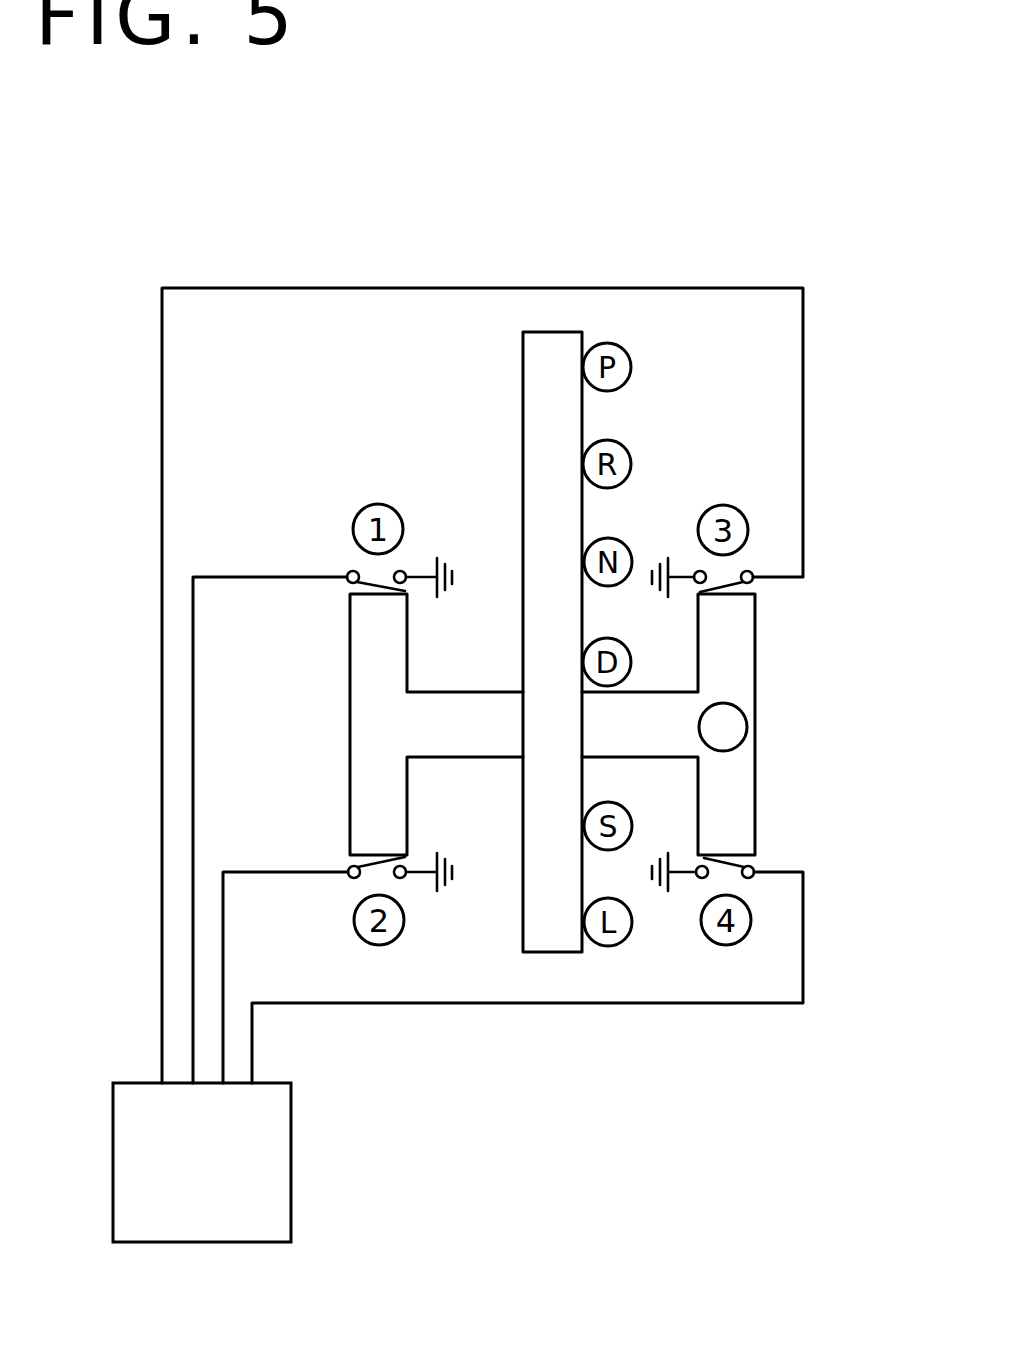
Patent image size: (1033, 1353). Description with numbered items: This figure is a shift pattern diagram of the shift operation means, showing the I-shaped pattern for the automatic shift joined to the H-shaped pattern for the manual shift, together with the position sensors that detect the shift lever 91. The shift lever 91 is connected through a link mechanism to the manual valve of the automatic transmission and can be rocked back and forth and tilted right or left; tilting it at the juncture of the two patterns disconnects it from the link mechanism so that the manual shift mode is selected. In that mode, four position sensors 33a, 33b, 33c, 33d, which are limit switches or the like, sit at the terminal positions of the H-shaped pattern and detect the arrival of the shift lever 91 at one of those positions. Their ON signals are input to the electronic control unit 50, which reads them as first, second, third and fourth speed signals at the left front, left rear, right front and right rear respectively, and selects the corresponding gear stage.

The position sensor 33a is at (372, 580).
The position sensor 33b is at (373, 873).
The position sensor 33c is at (728, 576).
The position sensor 33d is at (725, 876).
The shift lever 91 is at (746, 706).
The electronic control unit 50 is at (291, 1140).